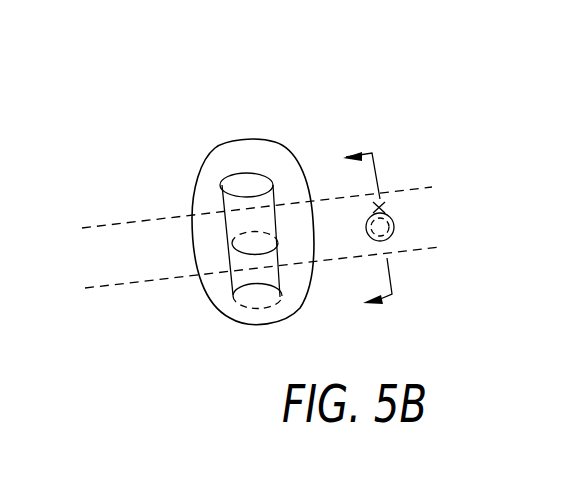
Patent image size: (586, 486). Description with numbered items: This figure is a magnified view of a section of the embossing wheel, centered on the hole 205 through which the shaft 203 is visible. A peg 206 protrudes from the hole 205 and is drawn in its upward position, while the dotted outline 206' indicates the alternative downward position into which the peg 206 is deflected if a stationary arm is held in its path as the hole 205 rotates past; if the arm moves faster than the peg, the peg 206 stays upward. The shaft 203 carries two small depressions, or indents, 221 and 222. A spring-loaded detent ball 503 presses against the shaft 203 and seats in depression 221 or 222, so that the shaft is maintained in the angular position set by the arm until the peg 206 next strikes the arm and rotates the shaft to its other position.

The shaft 203 is at (207, 193).
The hole 205 is at (236, 142).
The peg 206 is at (237, 226).
The downward position of peg 206' is at (193, 328).
The depression 221 is at (392, 196).
The depression 222 is at (393, 218).
The detent ball 503 is at (394, 237).